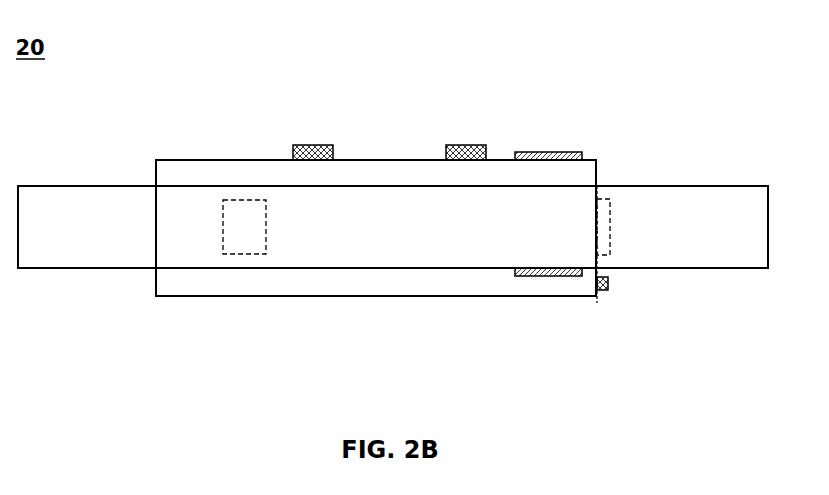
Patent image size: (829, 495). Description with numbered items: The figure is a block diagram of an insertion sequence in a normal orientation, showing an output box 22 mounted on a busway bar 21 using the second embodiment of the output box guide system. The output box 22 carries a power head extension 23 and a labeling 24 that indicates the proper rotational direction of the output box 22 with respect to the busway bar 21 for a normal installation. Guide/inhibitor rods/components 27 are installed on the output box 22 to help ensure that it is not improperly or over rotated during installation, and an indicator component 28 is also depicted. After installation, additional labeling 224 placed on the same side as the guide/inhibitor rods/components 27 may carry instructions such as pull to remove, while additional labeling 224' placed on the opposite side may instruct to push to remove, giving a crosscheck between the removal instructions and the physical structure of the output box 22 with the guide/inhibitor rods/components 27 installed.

The busway bar 21 is at (711, 240).
The output box 22 is at (153, 283).
The power head extension 23 is at (243, 227).
The labeling 24 is at (606, 227).
The guide/inhibitor rods/components 27 is at (313, 145).
The additional labeling 224 is at (560, 119).
The additional labeling 224' is at (538, 309).
The indicator component 28 is at (604, 290).